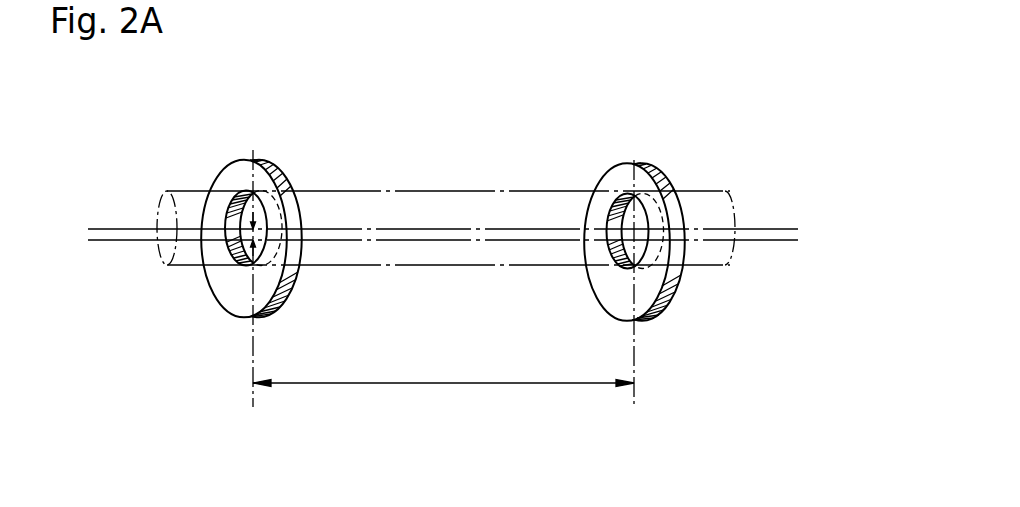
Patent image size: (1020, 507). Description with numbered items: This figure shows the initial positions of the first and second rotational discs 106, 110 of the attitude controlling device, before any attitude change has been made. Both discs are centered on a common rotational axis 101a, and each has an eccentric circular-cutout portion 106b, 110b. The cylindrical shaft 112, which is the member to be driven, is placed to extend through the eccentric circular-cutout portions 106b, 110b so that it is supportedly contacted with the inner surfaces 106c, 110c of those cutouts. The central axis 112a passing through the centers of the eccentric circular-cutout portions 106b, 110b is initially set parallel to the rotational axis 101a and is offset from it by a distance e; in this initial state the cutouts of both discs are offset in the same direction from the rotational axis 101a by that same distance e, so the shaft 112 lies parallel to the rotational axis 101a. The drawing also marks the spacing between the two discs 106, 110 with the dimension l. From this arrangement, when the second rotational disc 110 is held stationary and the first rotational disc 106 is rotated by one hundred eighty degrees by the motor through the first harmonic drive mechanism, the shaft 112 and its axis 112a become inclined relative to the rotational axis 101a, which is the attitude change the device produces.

The rotational axis 101a is at (115, 240).
The central axis 112a is at (135, 228).
The cylindrical shaft 112 is at (443, 200).
The first rotational disc 106 is at (251, 255).
The eccentric circular-cutout portion 106b is at (247, 189).
The inner surface 106c is at (242, 248).
The second rotational disc 110 is at (610, 255).
The eccentric circular-cutout portion 110b is at (607, 210).
The inner surface 110c is at (603, 268).
The offset distance e is at (262, 240).
The distance between rollers l is at (440, 378).